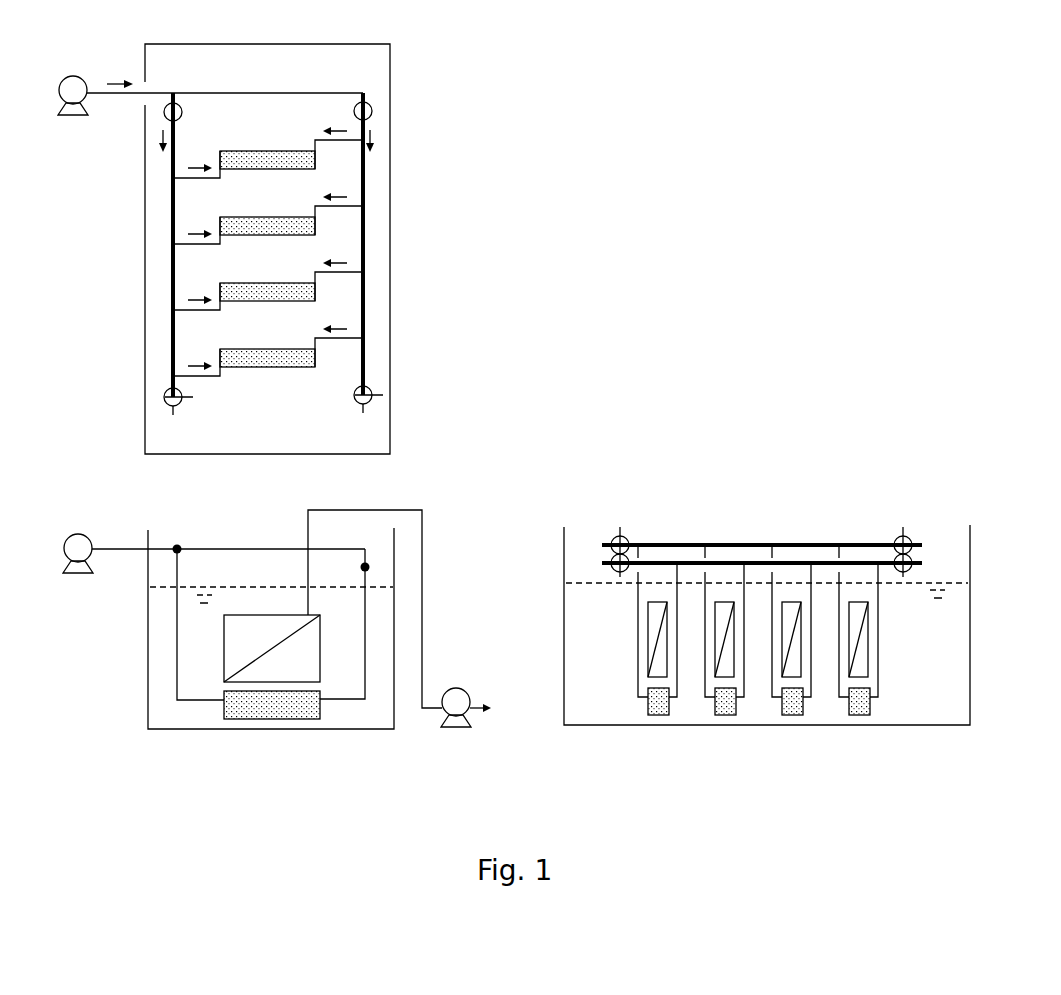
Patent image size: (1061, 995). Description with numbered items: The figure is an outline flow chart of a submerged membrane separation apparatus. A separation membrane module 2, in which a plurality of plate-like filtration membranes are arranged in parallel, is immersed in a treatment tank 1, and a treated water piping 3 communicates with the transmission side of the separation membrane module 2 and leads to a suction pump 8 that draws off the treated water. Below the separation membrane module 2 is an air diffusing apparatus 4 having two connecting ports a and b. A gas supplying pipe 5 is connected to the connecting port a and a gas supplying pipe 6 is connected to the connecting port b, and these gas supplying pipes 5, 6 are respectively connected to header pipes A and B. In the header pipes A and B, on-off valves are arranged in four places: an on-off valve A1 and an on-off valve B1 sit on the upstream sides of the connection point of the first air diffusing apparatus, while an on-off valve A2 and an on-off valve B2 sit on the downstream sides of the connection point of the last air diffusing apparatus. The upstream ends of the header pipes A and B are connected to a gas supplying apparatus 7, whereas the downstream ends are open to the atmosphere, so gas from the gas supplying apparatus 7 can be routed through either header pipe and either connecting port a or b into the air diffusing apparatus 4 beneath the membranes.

The treatment tank 1 is at (390, 96).
The separation membrane module 2 is at (243, 640).
The treated water piping 3 is at (423, 565).
The air diffusing apparatus 4 is at (240, 158).
The gas supplying pipe 5 is at (205, 378).
The gas supplying pipe 6 is at (326, 340).
The gas supplying apparatus 7 is at (70, 116).
The suction pump 8 is at (462, 690).
The header pipe A is at (173, 220).
The header pipe B is at (365, 250).
The on-off valve A1 is at (170, 122).
The on-off valve A2 is at (170, 390).
The on-off valve B1 is at (368, 120).
The on-off valve B2 is at (368, 386).
The connecting port a is at (219, 445).
The connecting port b is at (316, 425).